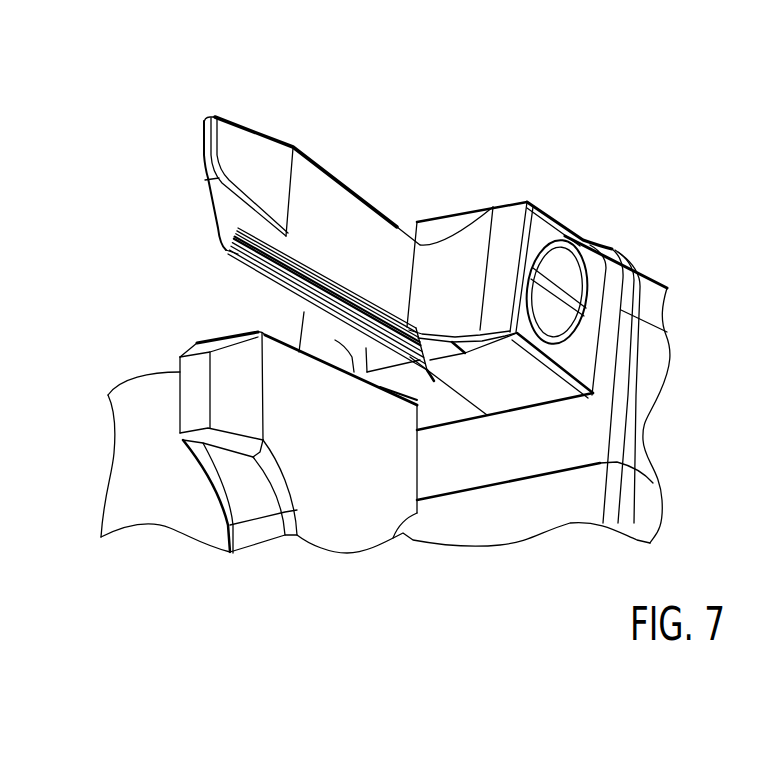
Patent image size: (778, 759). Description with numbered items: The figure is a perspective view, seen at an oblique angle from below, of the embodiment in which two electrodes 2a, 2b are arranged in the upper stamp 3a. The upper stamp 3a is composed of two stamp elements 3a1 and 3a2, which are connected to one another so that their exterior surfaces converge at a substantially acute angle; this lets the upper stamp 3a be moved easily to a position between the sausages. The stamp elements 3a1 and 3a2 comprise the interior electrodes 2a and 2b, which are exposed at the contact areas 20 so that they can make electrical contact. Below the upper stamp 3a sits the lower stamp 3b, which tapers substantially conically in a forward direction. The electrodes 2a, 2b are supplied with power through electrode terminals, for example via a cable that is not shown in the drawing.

The upper stamp 3a is at (176, 120).
The stamp element 3a1 is at (210, 203).
The stamp element 3a2 is at (263, 142).
The electrode 2a is at (228, 251).
The electrode 2b is at (302, 257).
The contact areas 20 is at (290, 256).
The lower stamp 3b is at (190, 398).